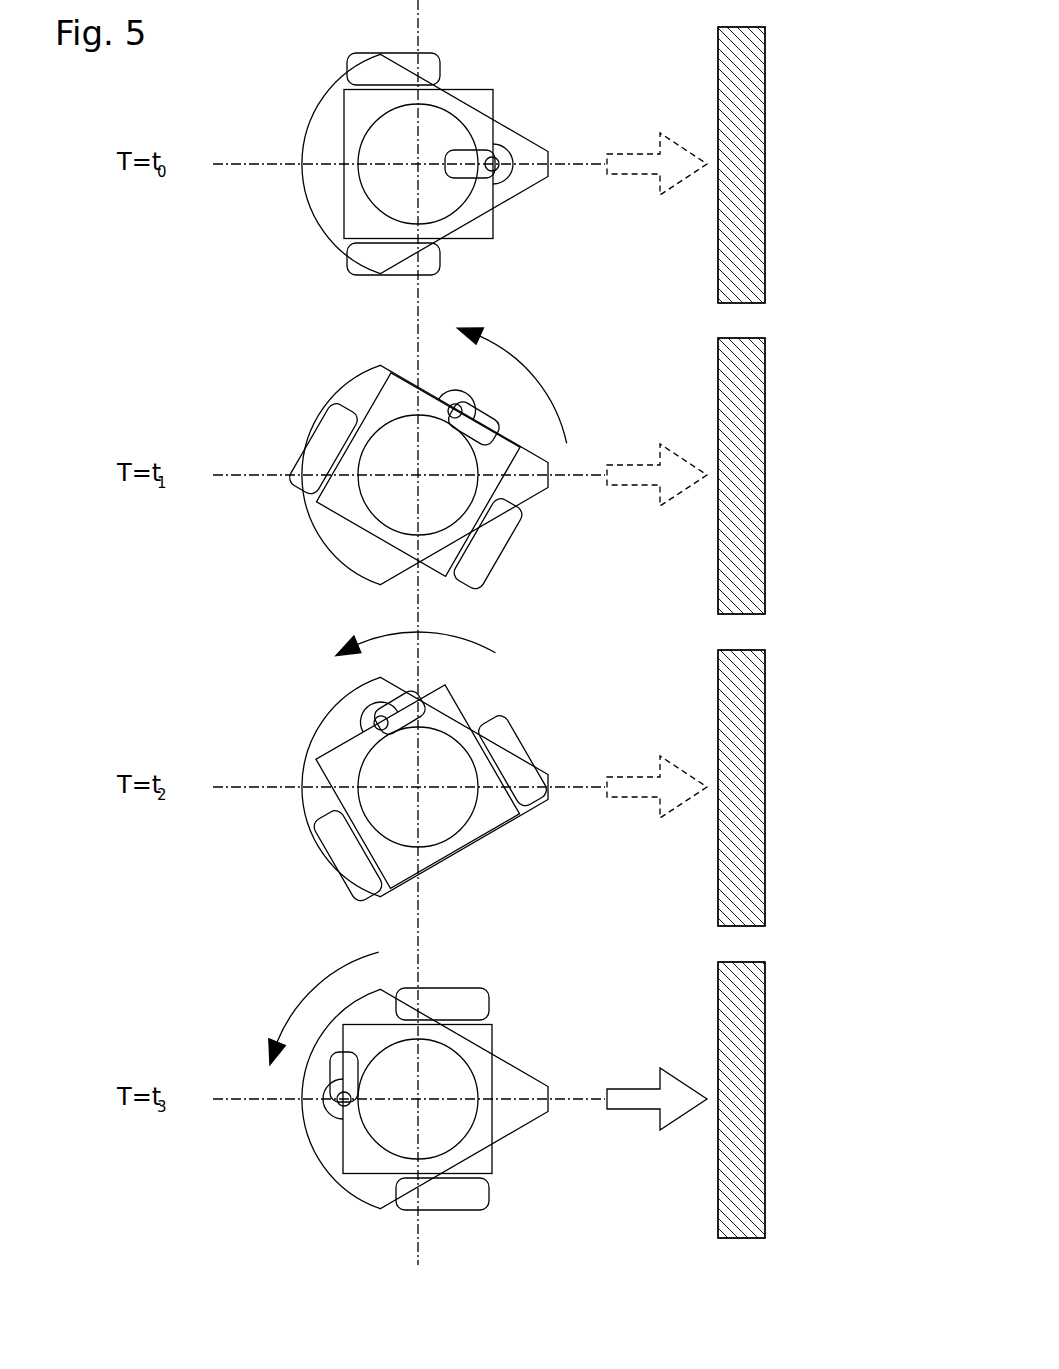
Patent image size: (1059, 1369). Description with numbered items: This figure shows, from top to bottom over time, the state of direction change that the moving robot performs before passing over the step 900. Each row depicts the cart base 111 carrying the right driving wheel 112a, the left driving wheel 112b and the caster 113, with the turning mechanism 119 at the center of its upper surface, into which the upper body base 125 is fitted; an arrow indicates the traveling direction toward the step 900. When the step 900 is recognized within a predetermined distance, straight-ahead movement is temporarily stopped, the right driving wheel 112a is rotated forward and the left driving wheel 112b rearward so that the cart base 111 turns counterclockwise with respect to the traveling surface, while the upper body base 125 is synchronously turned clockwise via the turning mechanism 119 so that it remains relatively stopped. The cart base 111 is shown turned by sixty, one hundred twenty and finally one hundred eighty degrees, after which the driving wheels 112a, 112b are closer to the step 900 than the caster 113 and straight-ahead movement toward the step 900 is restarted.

The cart base 111 is at (493, 100).
The right driving wheel 112a is at (441, 273).
The left driving wheel 112b is at (441, 62).
The caster 113 is at (500, 147).
The turning mechanism 119 is at (462, 208).
The upper body base 125 is at (327, 238).
The step 900 is at (718, 66).